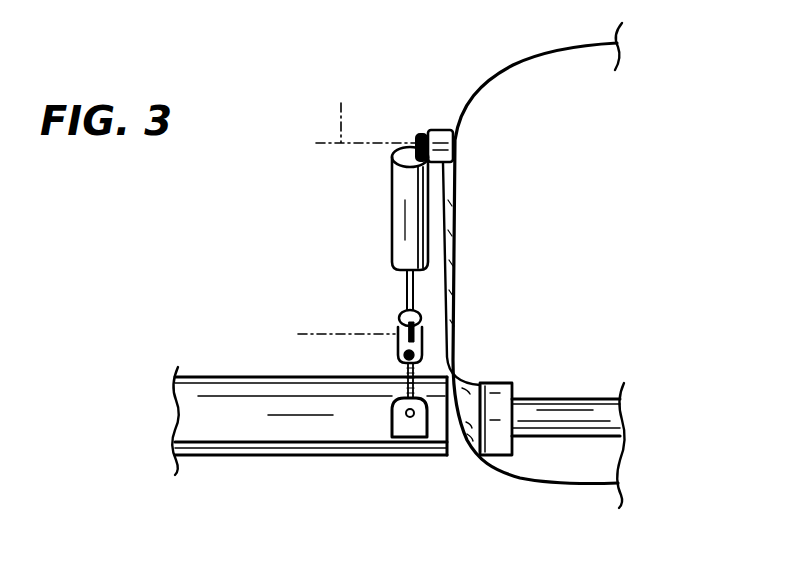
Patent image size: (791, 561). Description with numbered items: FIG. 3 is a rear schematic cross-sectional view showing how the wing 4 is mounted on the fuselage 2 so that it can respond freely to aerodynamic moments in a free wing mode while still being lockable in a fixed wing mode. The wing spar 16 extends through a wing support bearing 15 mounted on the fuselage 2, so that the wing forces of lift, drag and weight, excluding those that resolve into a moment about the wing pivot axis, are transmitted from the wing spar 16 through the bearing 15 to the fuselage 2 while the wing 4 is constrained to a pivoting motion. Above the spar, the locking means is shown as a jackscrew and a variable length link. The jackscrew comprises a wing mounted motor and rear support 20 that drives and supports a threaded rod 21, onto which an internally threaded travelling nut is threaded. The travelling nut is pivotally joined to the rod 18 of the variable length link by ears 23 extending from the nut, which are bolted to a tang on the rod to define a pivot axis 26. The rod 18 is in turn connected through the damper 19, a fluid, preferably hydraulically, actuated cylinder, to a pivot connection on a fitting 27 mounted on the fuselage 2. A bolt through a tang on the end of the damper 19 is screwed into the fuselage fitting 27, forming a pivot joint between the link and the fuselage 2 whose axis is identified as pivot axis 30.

The fuselage 2 is at (513, 65).
The wing 4 is at (203, 375).
The wing support bearing 15 is at (497, 457).
The wing spar 16 is at (565, 397).
The rod 18 is at (417, 288).
The damper 19 is at (392, 222).
The motor and rear support 20 is at (388, 420).
The threaded rod 21 is at (377, 376).
The ears 23 is at (420, 330).
The pivot axis 26 is at (367, 333).
The fuselage fitting 27 is at (441, 130).
The pivot axis 30 is at (341, 103).